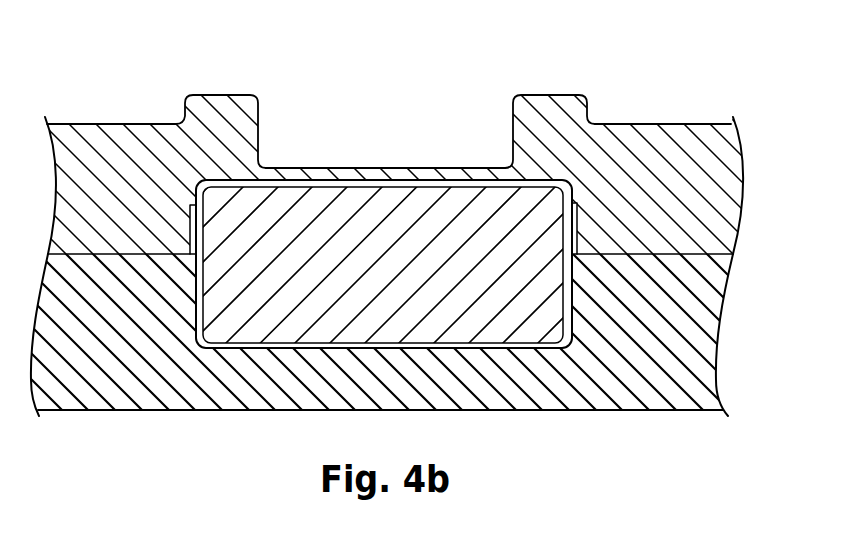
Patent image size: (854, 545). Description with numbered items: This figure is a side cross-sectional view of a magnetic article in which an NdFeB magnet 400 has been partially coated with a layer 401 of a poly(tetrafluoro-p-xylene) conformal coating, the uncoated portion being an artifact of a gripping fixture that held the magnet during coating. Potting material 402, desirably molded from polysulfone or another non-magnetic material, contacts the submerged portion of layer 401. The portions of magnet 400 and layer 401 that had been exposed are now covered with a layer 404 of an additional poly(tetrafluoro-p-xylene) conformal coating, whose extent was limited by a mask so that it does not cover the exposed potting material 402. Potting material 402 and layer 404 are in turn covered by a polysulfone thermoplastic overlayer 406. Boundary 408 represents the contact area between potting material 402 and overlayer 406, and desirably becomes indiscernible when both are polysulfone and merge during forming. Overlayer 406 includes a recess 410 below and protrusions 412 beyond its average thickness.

The NdFeB magnet 400 is at (453, 232).
The layer of poly(tetrafluoro-p-xylene) conformal coating 401 is at (197, 243).
The potting material 402 is at (115, 408).
The layer of additional poly(tetrafluoro-p-xylene) conformal coating 404 is at (221, 180).
The polysulfone thermoplastic overlayer 406 is at (593, 152).
The boundary 408 is at (667, 254).
The recess 410 is at (382, 132).
The protrusions 412 is at (232, 95).